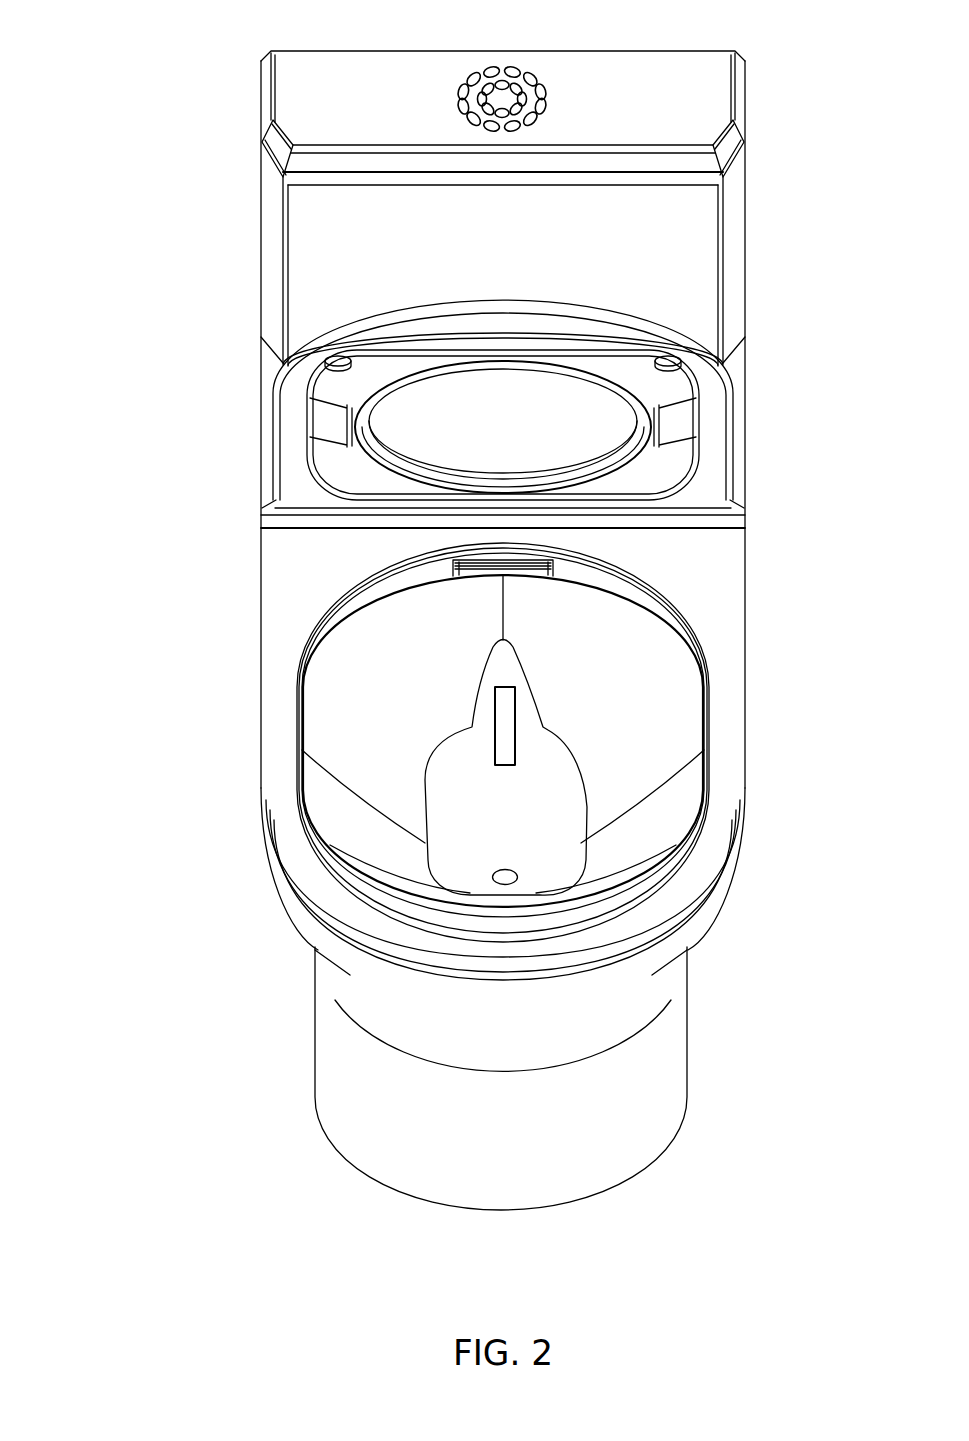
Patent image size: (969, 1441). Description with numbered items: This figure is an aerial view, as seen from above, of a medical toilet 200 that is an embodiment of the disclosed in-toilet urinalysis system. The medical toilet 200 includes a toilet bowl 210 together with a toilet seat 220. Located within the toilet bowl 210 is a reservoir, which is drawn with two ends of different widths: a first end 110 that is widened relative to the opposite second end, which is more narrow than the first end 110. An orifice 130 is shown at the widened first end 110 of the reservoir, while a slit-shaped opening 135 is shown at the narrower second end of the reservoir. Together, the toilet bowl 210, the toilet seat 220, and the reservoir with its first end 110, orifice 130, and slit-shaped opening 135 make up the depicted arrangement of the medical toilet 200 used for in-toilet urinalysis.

The medical toilet 200 is at (133, 60).
The first end 110 is at (479, 832).
The orifice 130 is at (503, 884).
The slit-shaped opening 135 is at (497, 735).
The toilet bowl 210 is at (683, 695).
The toilet seat 220 is at (731, 756).